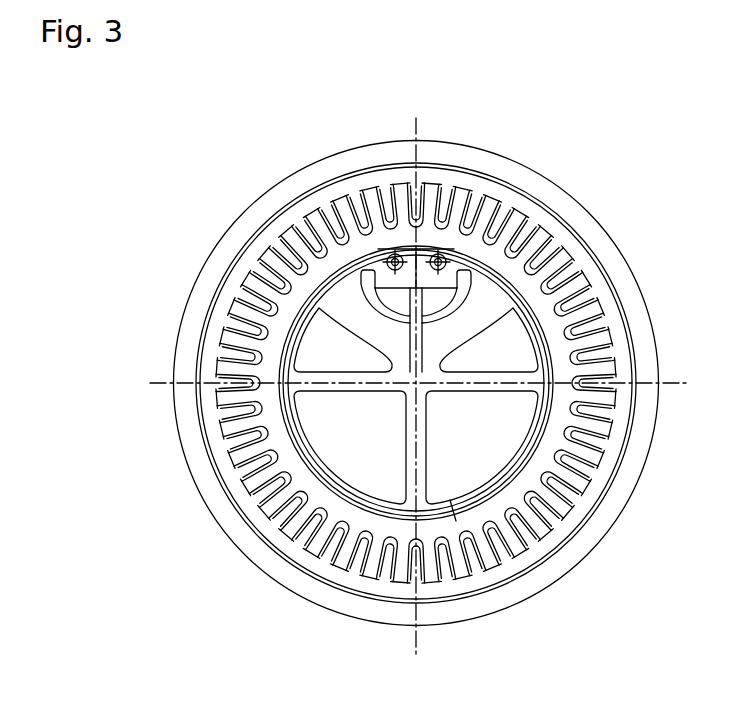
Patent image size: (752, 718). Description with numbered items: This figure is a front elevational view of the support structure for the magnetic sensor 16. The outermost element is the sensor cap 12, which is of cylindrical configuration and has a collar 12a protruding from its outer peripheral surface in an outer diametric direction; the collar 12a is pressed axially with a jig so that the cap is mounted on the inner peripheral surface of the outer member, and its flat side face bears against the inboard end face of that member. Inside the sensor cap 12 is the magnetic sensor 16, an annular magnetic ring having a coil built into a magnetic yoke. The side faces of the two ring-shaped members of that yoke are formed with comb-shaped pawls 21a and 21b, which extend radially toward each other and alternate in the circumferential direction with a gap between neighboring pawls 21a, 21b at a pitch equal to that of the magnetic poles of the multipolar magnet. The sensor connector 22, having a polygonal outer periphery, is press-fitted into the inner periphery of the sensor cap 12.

The sensor cap 12 is at (218, 236).
The collar 12a is at (343, 167).
The sensor connector 22 is at (270, 235).
The magnetic sensor 16 is at (218, 415).
The comb-shaped pawls 21a is at (478, 193).
The comb-shaped pawls 21b is at (490, 203).